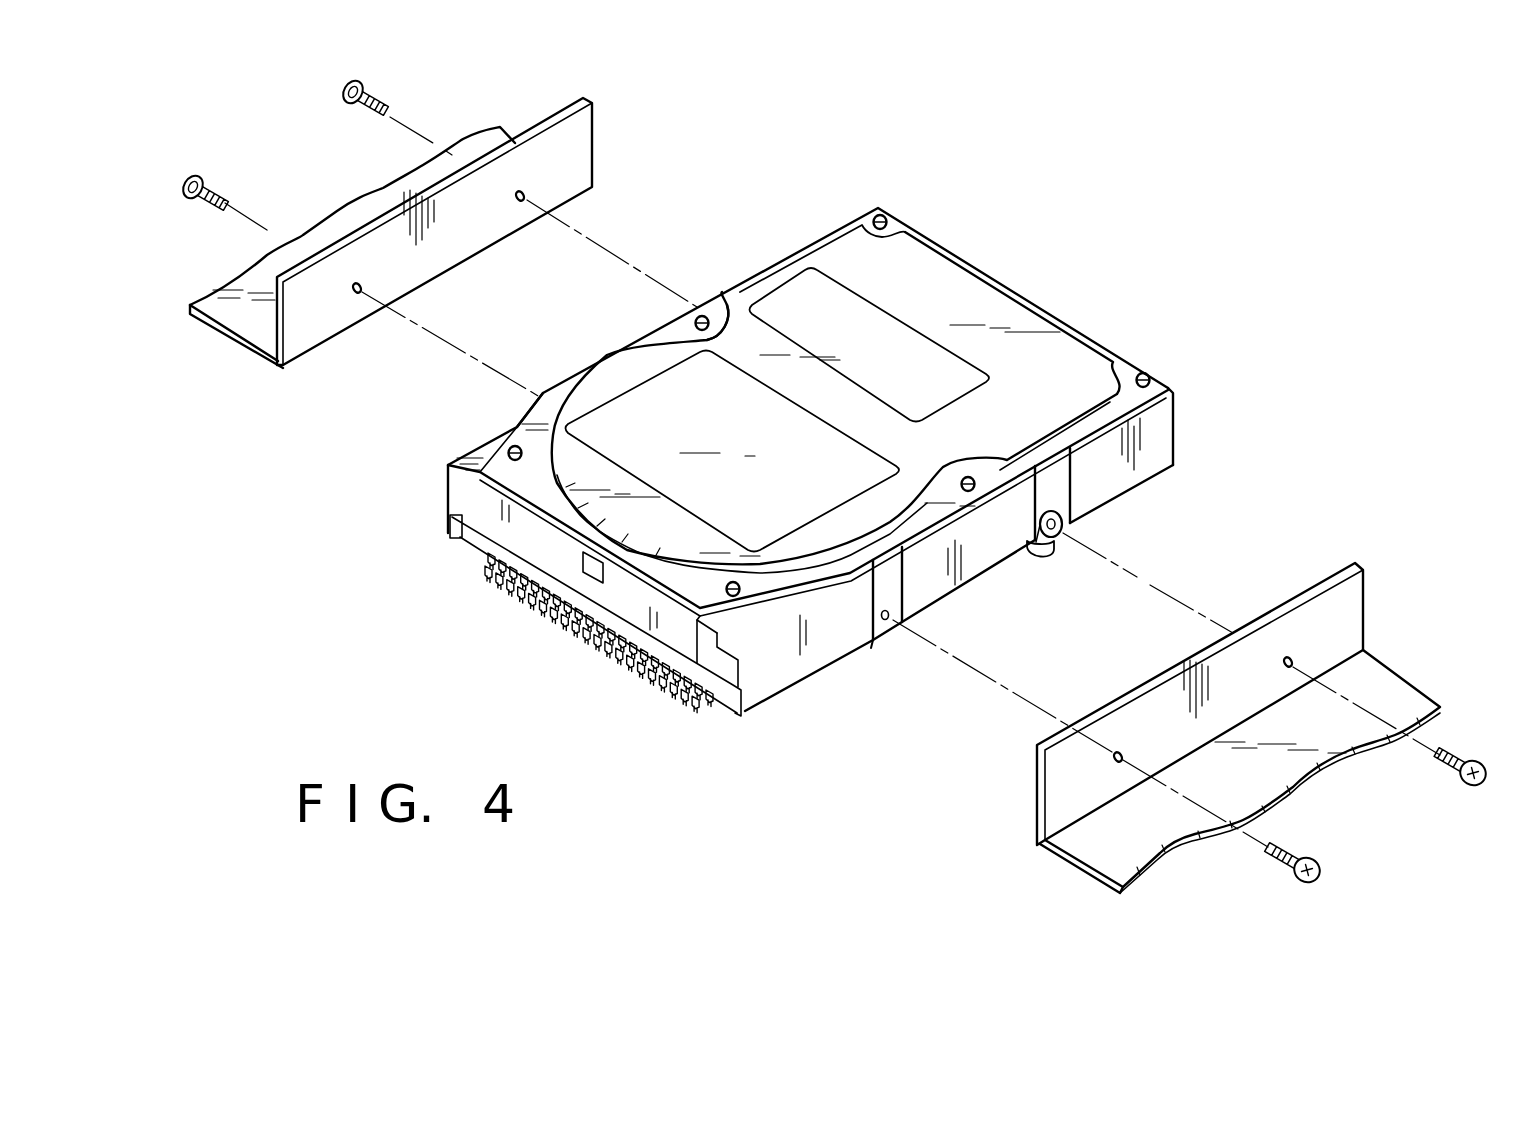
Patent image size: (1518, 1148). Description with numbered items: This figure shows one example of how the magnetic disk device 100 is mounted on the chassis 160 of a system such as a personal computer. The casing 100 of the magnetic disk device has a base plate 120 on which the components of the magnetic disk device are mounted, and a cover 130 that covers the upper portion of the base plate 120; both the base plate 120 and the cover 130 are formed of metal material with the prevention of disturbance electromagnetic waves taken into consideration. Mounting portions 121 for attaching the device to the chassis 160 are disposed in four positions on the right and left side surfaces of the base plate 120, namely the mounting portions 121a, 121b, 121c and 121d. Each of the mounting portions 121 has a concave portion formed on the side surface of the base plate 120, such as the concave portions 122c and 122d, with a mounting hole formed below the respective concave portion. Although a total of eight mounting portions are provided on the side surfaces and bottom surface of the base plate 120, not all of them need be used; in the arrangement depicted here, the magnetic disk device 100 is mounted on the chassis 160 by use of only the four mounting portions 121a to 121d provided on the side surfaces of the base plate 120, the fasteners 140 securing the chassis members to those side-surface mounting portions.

The casing 100 is at (856, 402).
The base plate 120 is at (1178, 420).
The mounting portions 121 is at (886, 622).
The mounting portion 121a is at (701, 298).
The mounting portion 121b is at (539, 386).
The mounting portion 121c is at (1031, 563).
The mounting portion 121d is at (872, 655).
The concave portion 122c is at (1057, 487).
The concave portion 122d is at (892, 585).
The cover 130 is at (990, 305).
The screws 140 is at (203, 177).
The chassis 160 is at (222, 332).